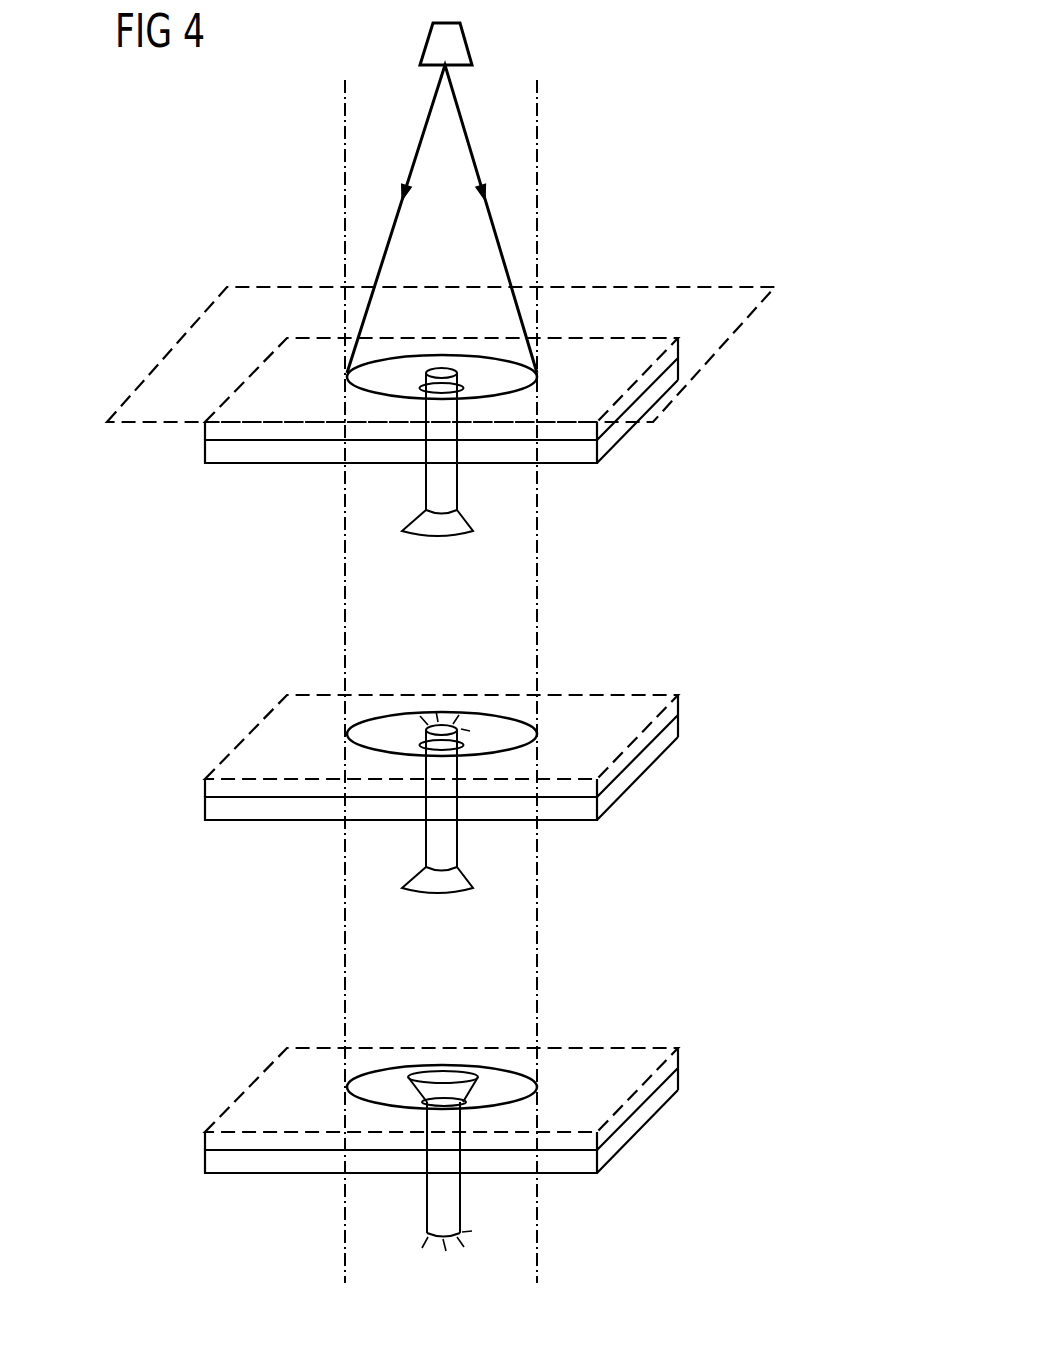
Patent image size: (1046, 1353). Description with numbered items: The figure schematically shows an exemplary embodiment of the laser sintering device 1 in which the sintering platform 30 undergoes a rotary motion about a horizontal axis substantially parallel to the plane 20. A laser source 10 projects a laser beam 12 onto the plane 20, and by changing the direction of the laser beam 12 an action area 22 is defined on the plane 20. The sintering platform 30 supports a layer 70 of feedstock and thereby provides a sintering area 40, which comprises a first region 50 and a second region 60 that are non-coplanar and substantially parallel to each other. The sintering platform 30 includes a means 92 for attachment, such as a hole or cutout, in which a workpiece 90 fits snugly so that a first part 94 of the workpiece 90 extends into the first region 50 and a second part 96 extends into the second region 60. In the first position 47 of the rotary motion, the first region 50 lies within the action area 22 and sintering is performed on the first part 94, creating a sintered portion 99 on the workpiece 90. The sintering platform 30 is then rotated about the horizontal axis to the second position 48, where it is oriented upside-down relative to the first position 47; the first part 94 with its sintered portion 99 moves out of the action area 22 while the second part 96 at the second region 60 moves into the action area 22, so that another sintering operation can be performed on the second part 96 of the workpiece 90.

The laser sintering device 1 is at (608, 263).
The laser source 10 is at (455, 40).
The laser beam 12 is at (430, 108).
The plane 20 is at (743, 320).
The action area 22 is at (491, 350).
The sintering platform 30 is at (609, 433).
The sintering area 40 is at (662, 366).
The first position 47 is at (601, 76).
The second position 48 is at (589, 1013).
The first region 50 is at (372, 380).
The second region 60 is at (410, 465).
The layer of feedstock 70 is at (210, 430).
The workpiece 90 is at (466, 485).
The means for attachment 92 is at (458, 367).
The first part of the workpiece 94 is at (424, 383).
The second part of the workpiece 96 is at (408, 517).
The sintered portion 99 is at (452, 718).